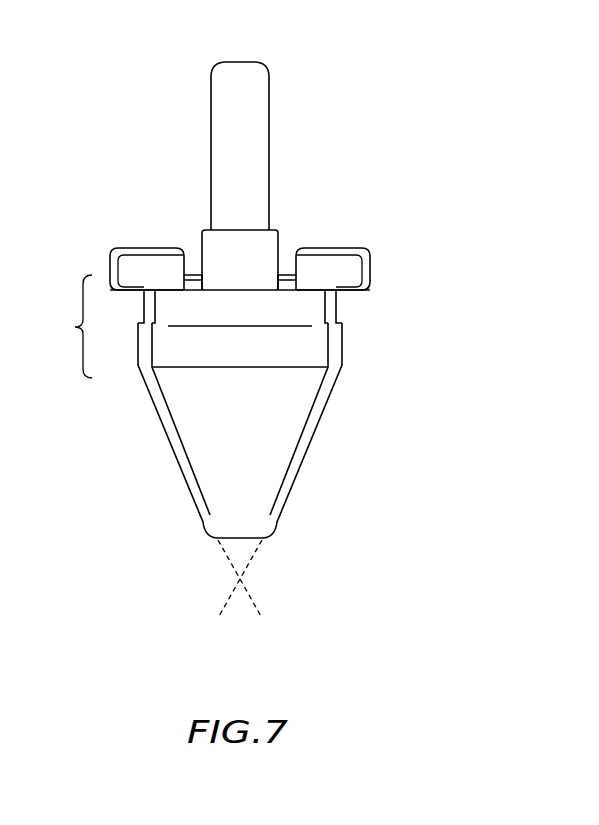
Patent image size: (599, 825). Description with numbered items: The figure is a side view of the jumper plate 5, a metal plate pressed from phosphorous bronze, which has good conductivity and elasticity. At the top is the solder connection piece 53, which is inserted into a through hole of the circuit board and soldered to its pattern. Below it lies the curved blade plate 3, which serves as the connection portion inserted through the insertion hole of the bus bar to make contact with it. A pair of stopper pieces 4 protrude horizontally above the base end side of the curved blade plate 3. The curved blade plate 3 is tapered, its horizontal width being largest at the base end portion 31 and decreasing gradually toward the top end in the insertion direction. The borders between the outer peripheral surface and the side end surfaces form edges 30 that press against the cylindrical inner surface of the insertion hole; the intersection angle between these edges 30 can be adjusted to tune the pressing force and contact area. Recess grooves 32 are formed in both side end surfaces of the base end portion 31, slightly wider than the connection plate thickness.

The curved blade plate 3 is at (280, 449).
The stopper pieces 4 is at (133, 262).
The jumper plate 5 is at (437, 455).
The edges 30 is at (343, 342).
The base end portion 31 is at (65, 326).
The recess grooves 32 is at (352, 305).
The solder connection piece 53 is at (260, 128).